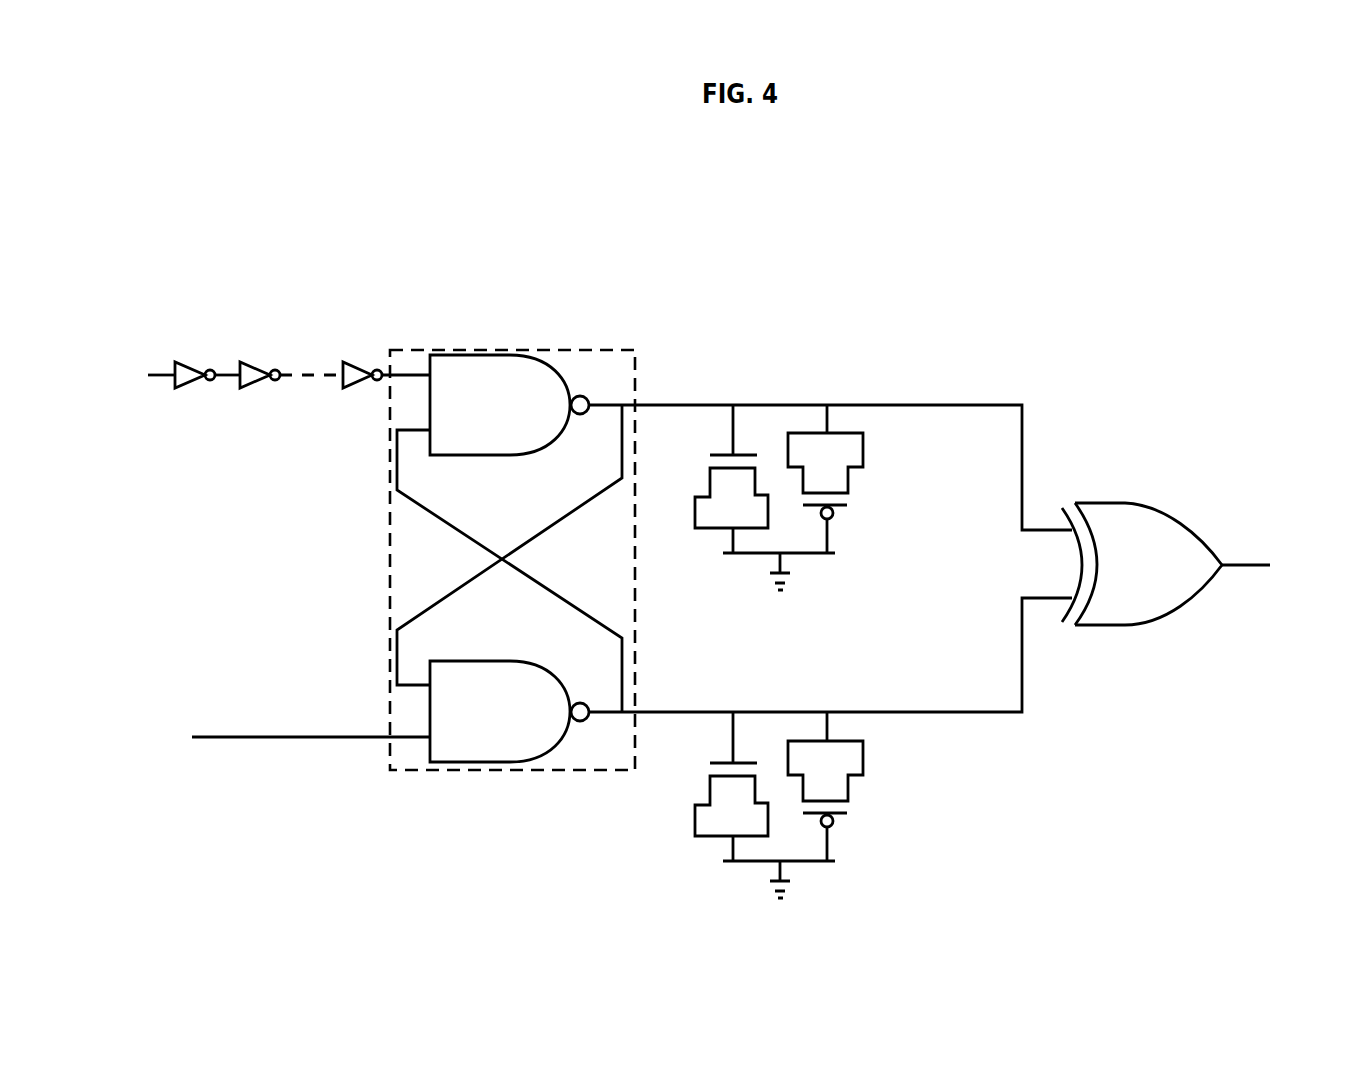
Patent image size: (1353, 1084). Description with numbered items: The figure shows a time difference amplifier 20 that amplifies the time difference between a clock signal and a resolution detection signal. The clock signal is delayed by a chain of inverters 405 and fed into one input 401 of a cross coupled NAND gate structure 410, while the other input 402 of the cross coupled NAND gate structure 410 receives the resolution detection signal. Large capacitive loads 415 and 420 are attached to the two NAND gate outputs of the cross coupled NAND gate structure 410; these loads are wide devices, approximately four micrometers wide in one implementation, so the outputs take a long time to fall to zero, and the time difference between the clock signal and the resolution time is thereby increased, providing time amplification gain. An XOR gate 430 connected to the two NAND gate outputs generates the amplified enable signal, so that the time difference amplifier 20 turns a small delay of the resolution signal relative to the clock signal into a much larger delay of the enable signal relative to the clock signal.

The time difference amplifier 20 is at (703, 439).
The first NAND gate 401 is at (420, 369).
The input 402 is at (412, 745).
The chain of inverters 405 is at (168, 325).
The cross coupled NAND gate structure 410 is at (607, 350).
The large capacitive load 415 is at (907, 410).
The large capacitive load 420 is at (907, 718).
The XOR gate 430 is at (1147, 518).